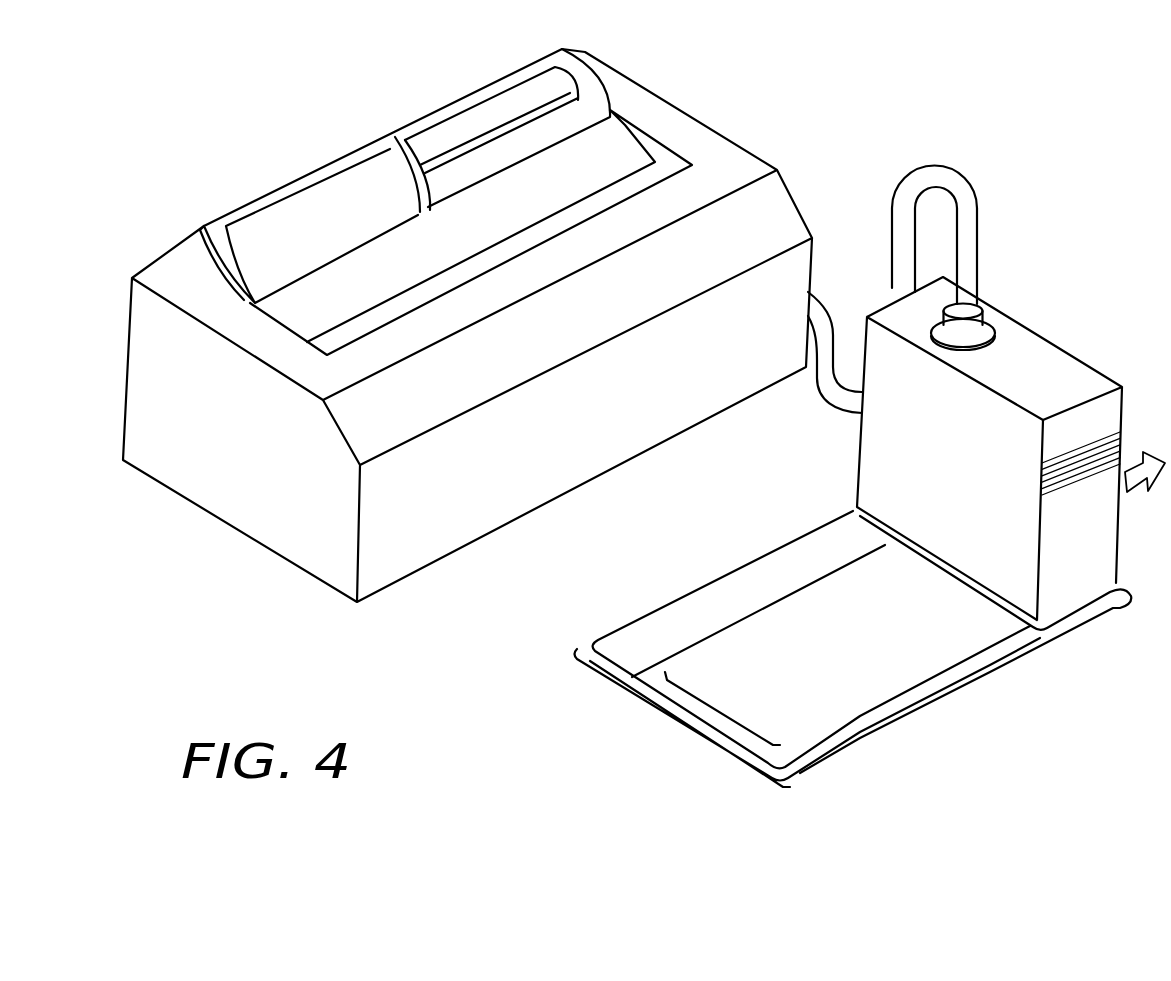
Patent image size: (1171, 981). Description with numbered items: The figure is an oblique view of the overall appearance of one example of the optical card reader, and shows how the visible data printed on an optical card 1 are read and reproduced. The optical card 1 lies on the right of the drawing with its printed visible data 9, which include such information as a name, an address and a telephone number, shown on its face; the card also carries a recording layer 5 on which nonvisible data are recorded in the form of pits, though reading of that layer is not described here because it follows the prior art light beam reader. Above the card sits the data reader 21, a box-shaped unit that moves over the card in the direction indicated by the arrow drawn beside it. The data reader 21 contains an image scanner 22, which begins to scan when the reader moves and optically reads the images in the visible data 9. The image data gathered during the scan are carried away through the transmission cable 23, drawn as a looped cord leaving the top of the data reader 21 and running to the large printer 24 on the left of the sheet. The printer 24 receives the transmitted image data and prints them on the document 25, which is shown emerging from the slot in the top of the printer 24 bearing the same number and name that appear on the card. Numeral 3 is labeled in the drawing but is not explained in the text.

The optical card 1 is at (672, 719).
The optical card 3 is at (615, 640).
The recording layer 5 is at (805, 728).
The visible data 9 is at (715, 715).
The data reader 21 is at (1082, 370).
The image scanner 22 is at (1088, 600).
The transmission cable 23 is at (966, 208).
The printer 24 is at (750, 160).
The document 25 is at (400, 140).